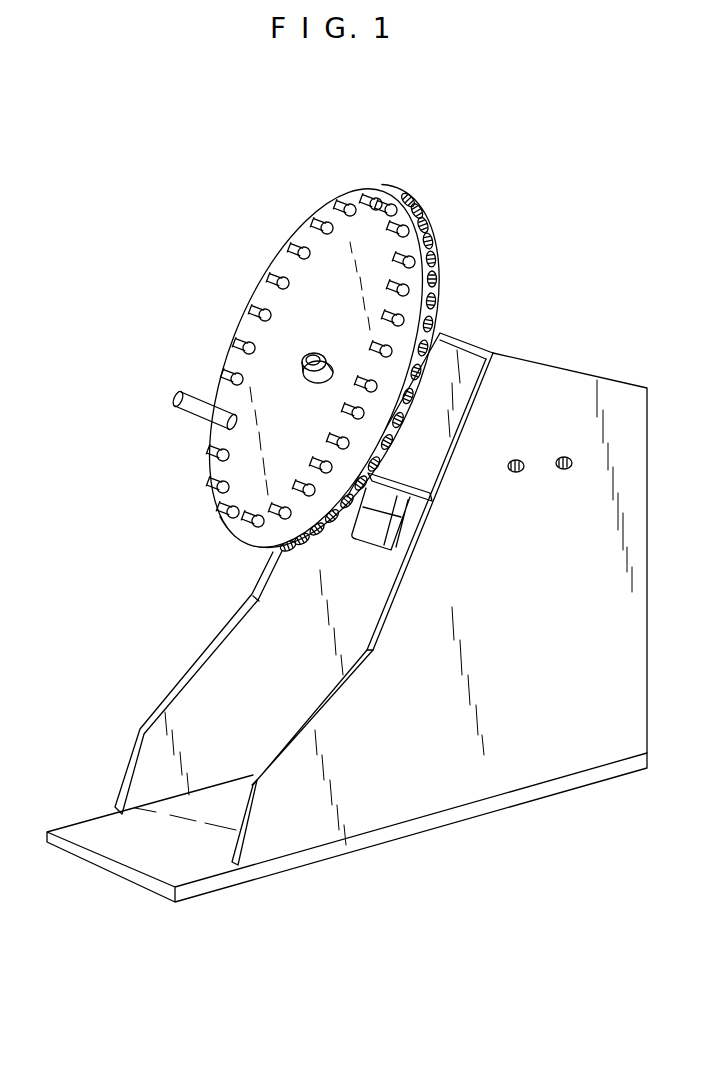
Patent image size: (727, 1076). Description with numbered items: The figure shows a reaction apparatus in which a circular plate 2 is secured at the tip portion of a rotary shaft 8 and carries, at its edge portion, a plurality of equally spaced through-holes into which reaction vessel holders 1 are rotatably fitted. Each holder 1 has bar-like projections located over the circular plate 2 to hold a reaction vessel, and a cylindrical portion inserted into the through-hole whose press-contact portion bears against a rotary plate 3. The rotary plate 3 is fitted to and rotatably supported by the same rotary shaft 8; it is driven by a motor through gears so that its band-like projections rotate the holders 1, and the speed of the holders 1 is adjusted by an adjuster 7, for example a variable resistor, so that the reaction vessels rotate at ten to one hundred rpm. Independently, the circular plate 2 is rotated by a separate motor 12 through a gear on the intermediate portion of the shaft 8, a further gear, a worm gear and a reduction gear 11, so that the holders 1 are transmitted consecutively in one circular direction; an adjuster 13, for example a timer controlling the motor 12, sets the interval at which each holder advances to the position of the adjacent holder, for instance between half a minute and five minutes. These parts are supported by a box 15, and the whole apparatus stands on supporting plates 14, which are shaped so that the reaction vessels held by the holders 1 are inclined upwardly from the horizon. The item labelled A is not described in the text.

The reaction vessel holder 1 is at (386, 200).
The circular plate 2 is at (421, 206).
The rotary plate 3 is at (444, 291).
The adjuster 7 is at (513, 473).
The rotary shaft 8 is at (305, 358).
The reduction gear 11 is at (398, 550).
The motor 12 is at (375, 540).
The adjuster 13 is at (563, 470).
The supporting plates 14 is at (303, 722).
The box 15 is at (473, 357).
The pin / rod A is at (196, 413).